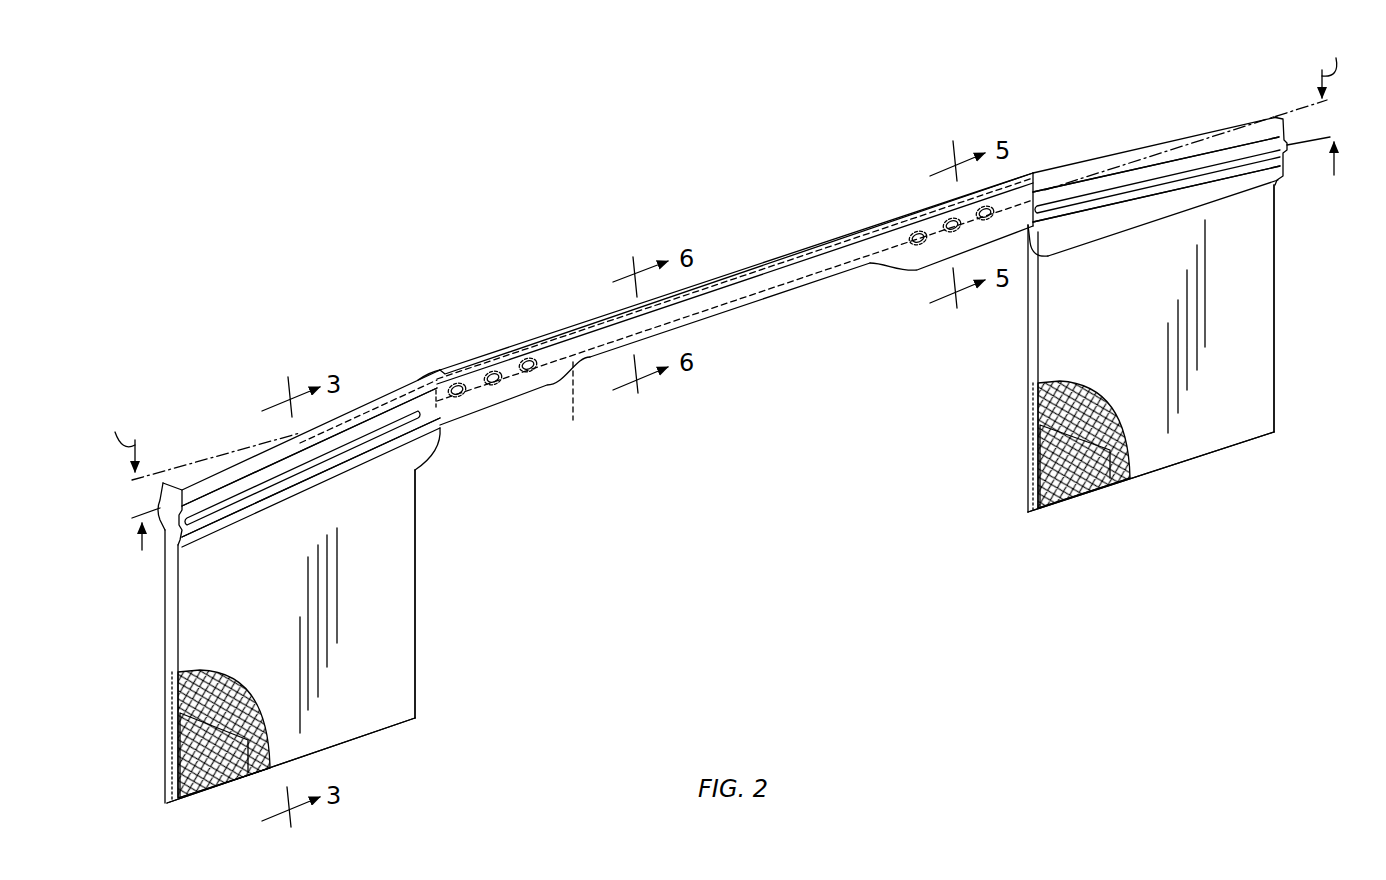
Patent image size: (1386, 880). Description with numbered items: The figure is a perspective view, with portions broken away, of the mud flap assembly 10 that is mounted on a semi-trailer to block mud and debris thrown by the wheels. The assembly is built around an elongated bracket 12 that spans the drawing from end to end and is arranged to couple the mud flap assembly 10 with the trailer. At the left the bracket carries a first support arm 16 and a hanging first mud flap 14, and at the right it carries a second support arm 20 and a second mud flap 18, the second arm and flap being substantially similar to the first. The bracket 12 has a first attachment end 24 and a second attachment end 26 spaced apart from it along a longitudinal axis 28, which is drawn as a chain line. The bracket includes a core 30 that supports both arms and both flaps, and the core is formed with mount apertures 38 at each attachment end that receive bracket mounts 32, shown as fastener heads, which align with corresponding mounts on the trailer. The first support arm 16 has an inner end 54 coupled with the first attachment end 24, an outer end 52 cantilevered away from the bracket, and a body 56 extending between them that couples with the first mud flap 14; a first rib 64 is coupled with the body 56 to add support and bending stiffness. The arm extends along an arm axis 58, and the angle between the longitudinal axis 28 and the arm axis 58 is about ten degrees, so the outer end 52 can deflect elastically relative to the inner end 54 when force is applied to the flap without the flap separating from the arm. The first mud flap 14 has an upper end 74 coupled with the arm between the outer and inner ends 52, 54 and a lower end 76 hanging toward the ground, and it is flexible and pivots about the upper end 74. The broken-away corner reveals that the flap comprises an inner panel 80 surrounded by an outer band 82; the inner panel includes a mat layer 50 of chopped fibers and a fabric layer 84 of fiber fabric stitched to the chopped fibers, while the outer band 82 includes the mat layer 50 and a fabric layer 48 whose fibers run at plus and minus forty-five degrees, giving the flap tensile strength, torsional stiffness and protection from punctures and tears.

The mud flap assembly 10 is at (476, 168).
The bracket 12 is at (716, 264).
The first mud flap 14 is at (430, 591).
The first support arm 16 is at (379, 381).
The second mud flap 18 is at (1022, 372).
The second support arm 20 is at (1124, 145).
The first attachment end 24 is at (438, 393).
The second attachment end 26 is at (1033, 182).
The longitudinal axis 28 is at (196, 458).
The core 30 is at (573, 407).
The bracket mount 32 is at (523, 358).
The mount aperture 38 is at (486, 348).
The fabric layer 48 is at (198, 683).
The mat layer 50 is at (176, 760).
The outer end 52 is at (172, 532).
The inner end 54 is at (428, 418).
The body 56 is at (398, 440).
The arm axis 58 is at (228, 508).
The first rib 64 is at (365, 445).
The upper end 74 is at (322, 513).
The lower end 76 is at (375, 722).
The inner panel 80 is at (217, 790).
The outer band 82 is at (385, 657).
The fabric layer 84 is at (233, 776).